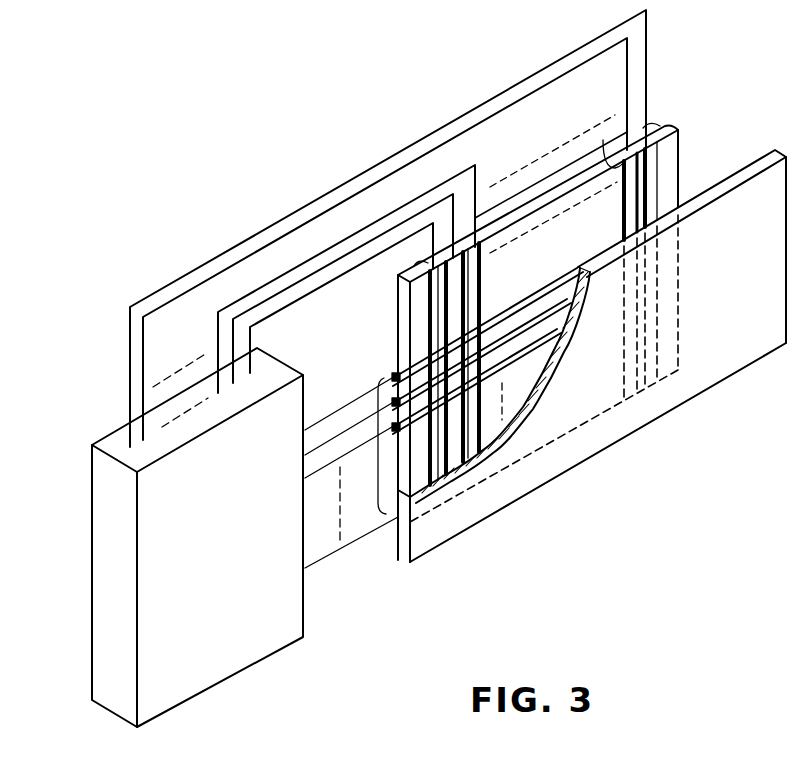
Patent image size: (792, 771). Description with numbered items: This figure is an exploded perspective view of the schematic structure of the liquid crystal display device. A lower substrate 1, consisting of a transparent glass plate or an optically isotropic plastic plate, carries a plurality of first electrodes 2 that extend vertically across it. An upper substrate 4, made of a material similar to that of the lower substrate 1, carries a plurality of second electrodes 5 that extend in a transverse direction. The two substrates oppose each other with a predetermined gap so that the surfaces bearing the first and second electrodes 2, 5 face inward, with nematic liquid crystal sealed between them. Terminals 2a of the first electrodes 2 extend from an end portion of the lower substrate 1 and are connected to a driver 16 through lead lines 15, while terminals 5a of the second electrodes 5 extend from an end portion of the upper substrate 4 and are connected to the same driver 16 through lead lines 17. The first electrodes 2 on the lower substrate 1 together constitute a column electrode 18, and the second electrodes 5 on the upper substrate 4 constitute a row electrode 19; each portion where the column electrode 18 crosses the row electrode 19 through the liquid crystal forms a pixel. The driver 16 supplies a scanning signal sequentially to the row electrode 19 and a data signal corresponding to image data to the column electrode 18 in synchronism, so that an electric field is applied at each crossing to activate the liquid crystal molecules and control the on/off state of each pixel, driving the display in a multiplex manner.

The lower substrate 1 is at (665, 126).
The first electrodes 2 is at (648, 173).
The terminals of first electrodes 2a is at (612, 173).
The upper substrate 4 is at (748, 190).
The second electrodes 5 is at (543, 297).
The terminals of second electrodes 5a is at (400, 372).
The lead lines 15 is at (647, 28).
The driver 16 is at (200, 672).
The lead lines 17 is at (325, 440).
The column electrode 18 is at (538, 182).
The row electrode 19 is at (368, 446).